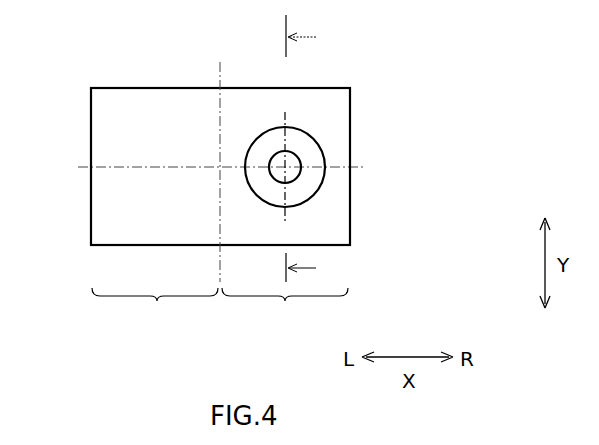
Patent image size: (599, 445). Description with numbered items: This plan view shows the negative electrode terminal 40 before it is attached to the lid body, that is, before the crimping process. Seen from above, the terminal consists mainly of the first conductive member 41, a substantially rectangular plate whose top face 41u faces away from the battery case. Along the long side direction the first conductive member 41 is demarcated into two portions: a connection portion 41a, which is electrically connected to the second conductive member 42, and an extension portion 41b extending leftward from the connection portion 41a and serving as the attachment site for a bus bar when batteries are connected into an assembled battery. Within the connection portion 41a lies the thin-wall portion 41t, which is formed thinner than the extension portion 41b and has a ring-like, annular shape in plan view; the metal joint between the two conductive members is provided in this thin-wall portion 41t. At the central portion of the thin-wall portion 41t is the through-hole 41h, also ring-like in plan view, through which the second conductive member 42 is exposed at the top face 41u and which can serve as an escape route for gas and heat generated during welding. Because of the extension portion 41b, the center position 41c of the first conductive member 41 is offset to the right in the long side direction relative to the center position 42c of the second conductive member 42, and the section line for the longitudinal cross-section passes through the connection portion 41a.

The negative electrode terminal 40 is at (352, 60).
The first conductive member 41 is at (112, 77).
The top face 41u is at (110, 118).
The center position of the first conductive member 41c is at (218, 165).
The thin-wall portion 41t is at (308, 145).
The through-hole 41h is at (302, 162).
The connection portion 41a is at (285, 313).
The extension portion 41b is at (155, 313).
The second conductive member 42 is at (290, 175).
The center position of the second conductive member 42c is at (283, 163).